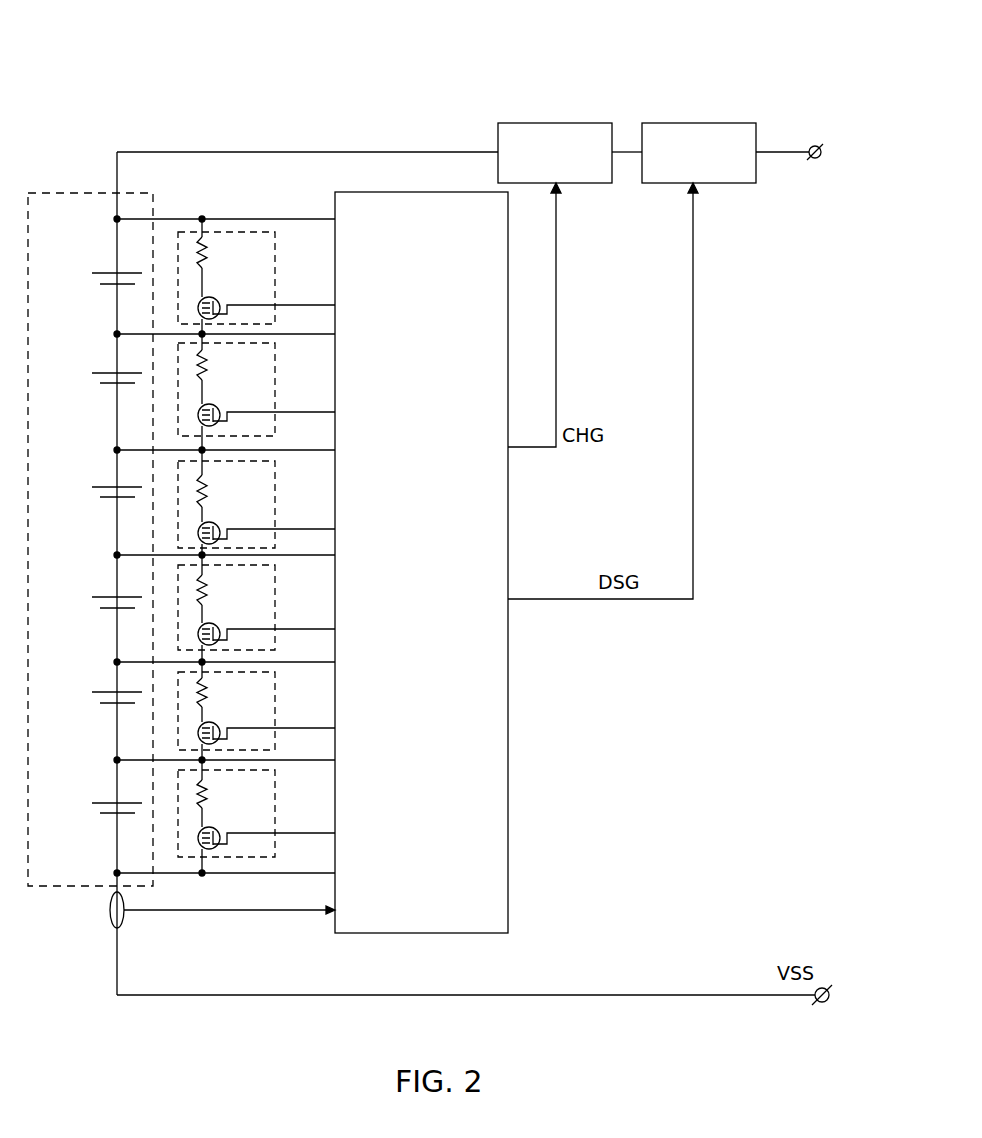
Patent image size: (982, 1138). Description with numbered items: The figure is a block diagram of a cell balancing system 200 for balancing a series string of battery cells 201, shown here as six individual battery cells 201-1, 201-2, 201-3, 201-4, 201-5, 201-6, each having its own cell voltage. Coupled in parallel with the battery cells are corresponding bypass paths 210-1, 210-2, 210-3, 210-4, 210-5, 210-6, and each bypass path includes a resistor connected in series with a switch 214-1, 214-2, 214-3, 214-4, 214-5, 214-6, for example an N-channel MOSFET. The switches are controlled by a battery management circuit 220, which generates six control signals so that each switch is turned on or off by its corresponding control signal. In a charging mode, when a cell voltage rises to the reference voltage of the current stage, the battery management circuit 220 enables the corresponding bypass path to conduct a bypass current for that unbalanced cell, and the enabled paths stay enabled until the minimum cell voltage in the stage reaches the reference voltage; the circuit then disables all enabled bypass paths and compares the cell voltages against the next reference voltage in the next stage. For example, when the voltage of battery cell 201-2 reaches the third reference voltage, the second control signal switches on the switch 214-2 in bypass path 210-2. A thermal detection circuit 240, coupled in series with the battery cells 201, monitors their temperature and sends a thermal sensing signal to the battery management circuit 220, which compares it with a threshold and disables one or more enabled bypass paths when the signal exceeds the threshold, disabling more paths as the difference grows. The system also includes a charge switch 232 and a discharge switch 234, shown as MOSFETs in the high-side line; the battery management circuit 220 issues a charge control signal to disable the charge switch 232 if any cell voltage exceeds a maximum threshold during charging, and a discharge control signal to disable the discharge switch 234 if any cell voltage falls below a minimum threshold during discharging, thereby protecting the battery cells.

The cell balancing system 200 is at (162, 72).
The battery cells 201 is at (90, 192).
The battery cell 201-1 is at (99, 272).
The battery cell 201-2 is at (99, 372).
The battery cell 201-3 is at (99, 486).
The battery cell 201-4 is at (99, 596).
The battery cell 201-5 is at (99, 691).
The battery cell 201-6 is at (99, 802).
The bypass path 210-1 is at (258, 276).
The bypass path 210-2 is at (258, 392).
The bypass path 210-3 is at (258, 502).
The bypass path 210-4 is at (258, 608).
The bypass path 210-5 is at (258, 711).
The bypass path 210-6 is at (258, 816).
The switch 214-1 is at (213, 298).
The switch 214-2 is at (213, 405).
The switch 214-3 is at (213, 520).
The switch 214-4 is at (213, 623).
The switch 214-5 is at (213, 722).
The switch 214-6 is at (213, 827).
The battery management circuit 220 is at (405, 557).
The charge switch 232 is at (568, 122).
The discharge switch 234 is at (716, 122).
The thermal detection circuit 240 is at (112, 908).